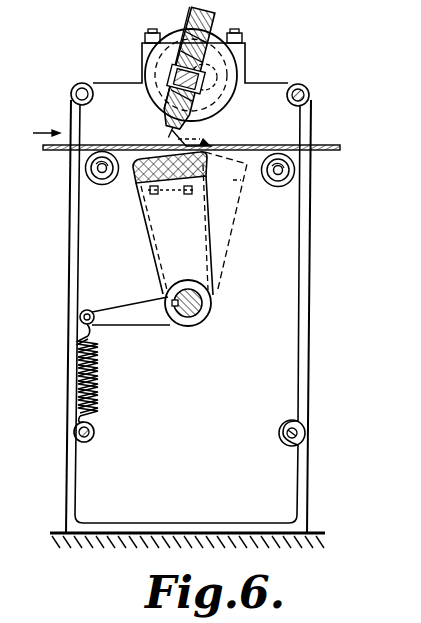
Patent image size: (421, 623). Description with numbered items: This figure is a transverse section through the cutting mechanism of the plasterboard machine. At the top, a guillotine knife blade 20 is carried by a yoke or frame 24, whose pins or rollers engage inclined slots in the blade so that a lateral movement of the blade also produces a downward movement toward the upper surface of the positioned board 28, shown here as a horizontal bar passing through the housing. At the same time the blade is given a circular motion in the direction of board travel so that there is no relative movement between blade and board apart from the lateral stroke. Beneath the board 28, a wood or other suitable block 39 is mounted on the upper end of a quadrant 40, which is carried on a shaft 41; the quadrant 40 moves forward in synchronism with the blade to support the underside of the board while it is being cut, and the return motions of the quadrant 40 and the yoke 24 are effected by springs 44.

The guillotine knife blade 20 is at (174, 138).
The yoke or frame 24 is at (220, 62).
The positioned board 28 is at (282, 146).
The block 39 is at (135, 178).
The quadrant 40 is at (192, 258).
The shaft 41 is at (192, 312).
The springs 44 is at (78, 383).